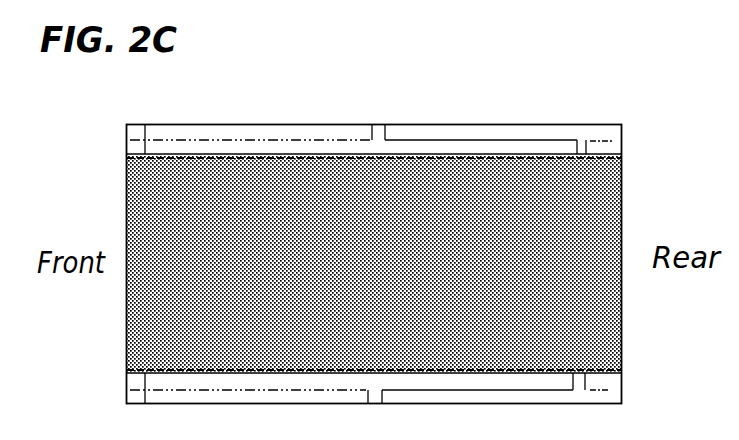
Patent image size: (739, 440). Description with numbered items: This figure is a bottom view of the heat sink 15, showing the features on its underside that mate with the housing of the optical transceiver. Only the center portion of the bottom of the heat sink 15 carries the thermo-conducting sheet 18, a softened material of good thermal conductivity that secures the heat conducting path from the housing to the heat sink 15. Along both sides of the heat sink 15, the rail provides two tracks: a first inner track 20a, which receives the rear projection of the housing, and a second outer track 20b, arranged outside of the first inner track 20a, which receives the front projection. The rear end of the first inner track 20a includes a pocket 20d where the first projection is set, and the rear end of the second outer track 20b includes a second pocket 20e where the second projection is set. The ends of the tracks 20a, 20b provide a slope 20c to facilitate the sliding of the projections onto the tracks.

The heat sink 15 is at (622, 226).
The thermo-conducting sheet 18 is at (603, 312).
The first inner track 20a is at (447, 148).
The second outer track 20b is at (245, 134).
The slope 20c is at (133, 131).
The pocket 20d is at (610, 147).
The second pocket 20e is at (548, 131).